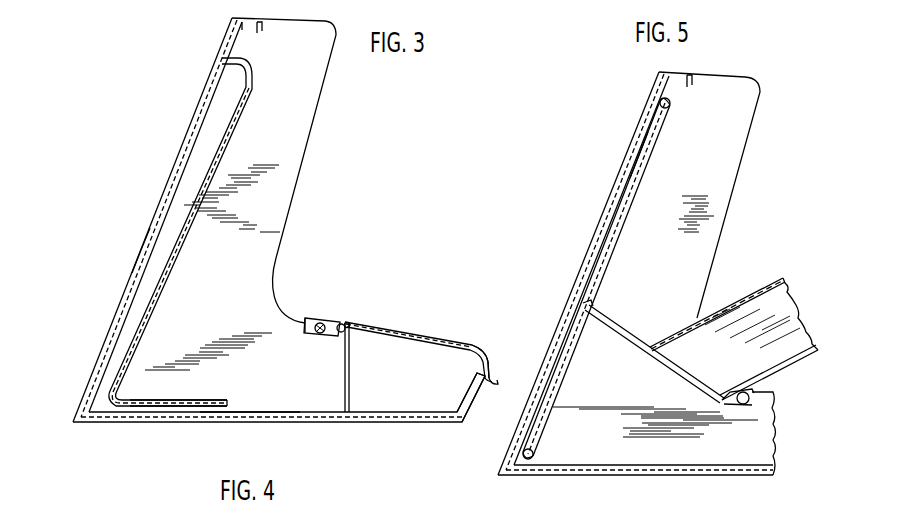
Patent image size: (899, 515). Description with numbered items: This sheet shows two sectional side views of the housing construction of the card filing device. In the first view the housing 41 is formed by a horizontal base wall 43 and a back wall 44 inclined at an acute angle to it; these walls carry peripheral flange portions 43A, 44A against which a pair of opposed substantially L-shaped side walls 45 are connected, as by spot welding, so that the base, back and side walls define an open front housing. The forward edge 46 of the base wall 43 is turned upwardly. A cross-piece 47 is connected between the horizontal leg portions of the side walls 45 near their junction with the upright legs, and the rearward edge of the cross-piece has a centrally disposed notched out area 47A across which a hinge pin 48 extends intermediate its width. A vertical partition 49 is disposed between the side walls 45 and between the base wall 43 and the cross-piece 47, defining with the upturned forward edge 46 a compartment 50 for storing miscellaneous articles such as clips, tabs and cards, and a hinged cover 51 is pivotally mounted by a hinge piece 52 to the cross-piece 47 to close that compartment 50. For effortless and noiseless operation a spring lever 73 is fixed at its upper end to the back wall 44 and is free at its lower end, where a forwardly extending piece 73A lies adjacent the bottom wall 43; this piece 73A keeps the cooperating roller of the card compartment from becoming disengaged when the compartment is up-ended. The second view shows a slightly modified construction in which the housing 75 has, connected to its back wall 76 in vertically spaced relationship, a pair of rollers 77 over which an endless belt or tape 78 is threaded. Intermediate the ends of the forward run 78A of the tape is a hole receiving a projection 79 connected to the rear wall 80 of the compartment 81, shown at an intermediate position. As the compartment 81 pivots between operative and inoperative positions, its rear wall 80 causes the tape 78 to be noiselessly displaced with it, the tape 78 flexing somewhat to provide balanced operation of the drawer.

In FIG. 3, the housing 41 is at (302, 185).
In FIG. 3, the base wall 43 is at (305, 420).
In FIG. 3, the peripheral flange portion of base wall 43A is at (265, 415).
In FIG. 3, the back wall 44 is at (163, 195).
In FIG. 3, the peripheral flange portion of back wall 44A is at (141, 250).
In FIG. 3, the side walls 45 is at (263, 272).
In FIG. 3, the forward edge of base plate 46 is at (473, 395).
In FIG. 3, the cross-piece 47 is at (341, 324).
In FIG. 3, the notched out area 47A is at (310, 318).
In FIG. 3, the hinge pin 48 is at (317, 342).
In FIG. 3, the vertical partition 49 is at (350, 369).
In FIG. 3, the compartment 50 is at (440, 360).
In FIG. 3, the hinged cover 51 is at (413, 333).
In FIG. 3, the hinge piece 52 is at (352, 326).
In FIG. 3, the spring lever 73 is at (223, 155).
In FIG. 3, the forwardly extending piece 73A is at (145, 403).
In FIG. 5, the housing 75 is at (743, 203).
In FIG. 5, the back wall 76 is at (590, 245).
In FIG. 5, the rollers 77 is at (672, 104).
In FIG. 5, the endless belt or tape 78 is at (632, 210).
In FIG. 5, the forward run of tape 78A is at (657, 143).
In FIG. 5, the projection 79 is at (613, 320).
In FIG. 5, the rear wall of compartment 80 is at (668, 366).
In FIG. 5, the compartment 81 is at (732, 302).